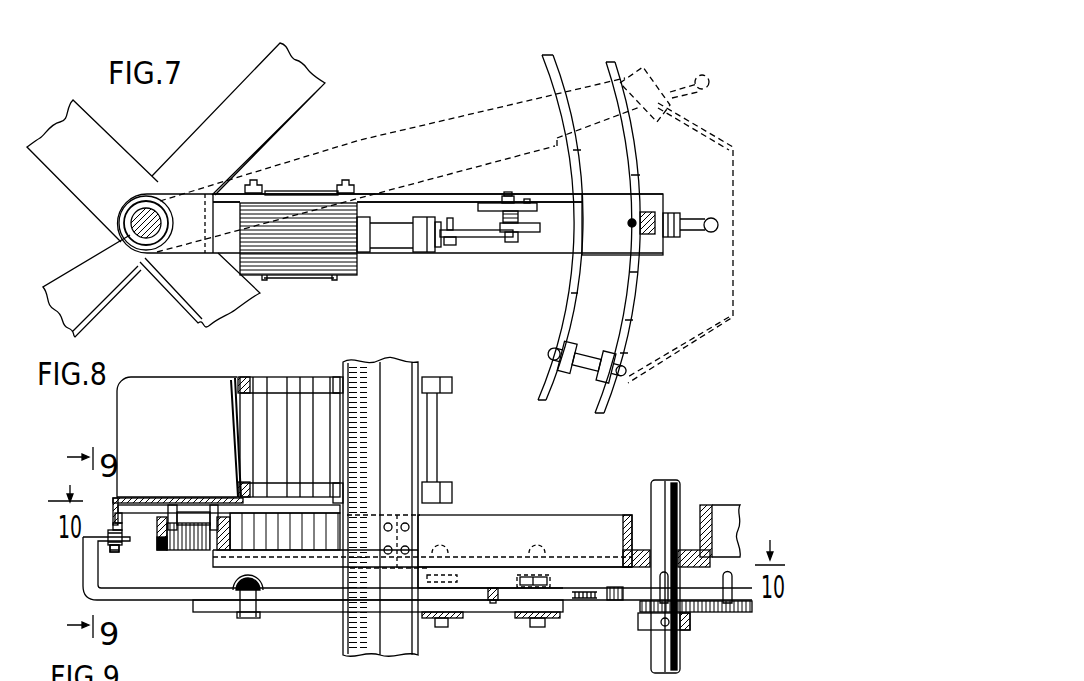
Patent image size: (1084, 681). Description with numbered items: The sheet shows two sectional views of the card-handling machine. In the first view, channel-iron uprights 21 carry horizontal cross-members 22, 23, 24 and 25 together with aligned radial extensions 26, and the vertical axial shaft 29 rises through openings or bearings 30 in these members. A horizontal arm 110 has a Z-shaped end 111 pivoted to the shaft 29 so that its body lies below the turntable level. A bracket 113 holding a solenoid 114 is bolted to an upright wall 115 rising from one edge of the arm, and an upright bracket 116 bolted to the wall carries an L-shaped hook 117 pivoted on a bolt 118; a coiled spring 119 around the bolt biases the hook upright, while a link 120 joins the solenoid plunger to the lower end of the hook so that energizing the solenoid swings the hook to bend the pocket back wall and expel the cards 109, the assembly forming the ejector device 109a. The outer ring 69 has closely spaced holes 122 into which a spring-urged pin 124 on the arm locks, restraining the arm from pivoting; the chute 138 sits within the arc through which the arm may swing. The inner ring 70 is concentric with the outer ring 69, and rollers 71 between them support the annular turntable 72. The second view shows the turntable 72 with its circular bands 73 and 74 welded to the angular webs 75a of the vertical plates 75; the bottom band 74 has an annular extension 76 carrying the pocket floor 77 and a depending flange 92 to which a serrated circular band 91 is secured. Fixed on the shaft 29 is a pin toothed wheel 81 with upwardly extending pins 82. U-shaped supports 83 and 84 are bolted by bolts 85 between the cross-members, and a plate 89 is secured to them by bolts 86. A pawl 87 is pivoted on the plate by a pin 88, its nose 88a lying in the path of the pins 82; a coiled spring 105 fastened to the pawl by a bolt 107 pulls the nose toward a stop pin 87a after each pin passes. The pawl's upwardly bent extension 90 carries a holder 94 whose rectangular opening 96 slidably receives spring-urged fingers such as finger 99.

In FIG. 8, the uprights 21 is at (397, 370).
In FIG. 7, the cross-member 22 is at (105, 140).
In FIG. 7, the cross-member 23 is at (258, 70).
In FIG. 8, the cross-member 23 is at (532, 520).
In FIG. 7, the cross-member 24 is at (65, 272).
In FIG. 8, the cross-member 24 is at (728, 513).
In FIG. 7, the cross-member 25 is at (188, 295).
In FIG. 8, the radial extension 26 is at (307, 560).
In FIG. 7, the vertical axial shaft 29 is at (138, 212).
In FIG. 8, the vertical axial shaft 29 is at (679, 481).
In FIG. 8, the openings or bearings 30 is at (678, 549).
In FIG. 7, the outer ring 69 is at (631, 338).
In FIG. 8, the outer ring 69 is at (163, 550).
In FIG. 7, the inner ring 70 is at (571, 299).
In FIG. 8, the inner ring 70 is at (280, 533).
In FIG. 7, the rollers 71 is at (592, 353).
In FIG. 8, the rollers 71 is at (187, 512).
In FIG. 8, the annular turntable 72 is at (440, 371).
In FIG. 8, the circular band 73 is at (452, 381).
In FIG. 8, the bottom band 74 is at (452, 487).
In FIG. 8, the plates or walls 75 is at (193, 385).
In FIG. 8, the angular webs or backs 75a is at (247, 395).
In FIG. 8, the annular extension 76 is at (217, 503).
In FIG. 8, the floor 77 is at (133, 497).
In FIG. 8, the pin toothed wheel 81 is at (713, 613).
In FIG. 8, the pins 82 is at (725, 583).
In FIG. 8, the U-shaped support 83 is at (455, 628).
In FIG. 8, the U-shaped support 84 is at (522, 625).
In FIG. 8, the bolts 85 is at (445, 547).
In FIG. 8, the bolts 86 is at (442, 630).
In FIG. 8, the pawl 87 is at (172, 597).
In FIG. 8, the stop pin 87a is at (493, 603).
In FIG. 8, the pin 88 is at (250, 618).
In FIG. 8, the nose 88a is at (625, 593).
In FIG. 8, the plate 89 is at (305, 612).
In FIG. 8, the upwardly bent extension 90 is at (83, 567).
In FIG. 8, the circular band 91 is at (115, 515).
In FIG. 8, the depending flange 92 is at (122, 514).
In FIG. 8, the holder 94 is at (120, 550).
In FIG. 8, the rectangular vertical opening 96 is at (112, 537).
In FIG. 8, the finger 99 is at (122, 532).
In FIG. 8, the coiled spring 105 is at (535, 578).
In FIG. 8, the bolt 107 is at (520, 578).
In FIG. 7, the cards 109 is at (417, 265).
In FIG. 7, the ejector device 109a is at (362, 160).
In FIG. 7, the horizontal arm 110 is at (562, 203).
In FIG. 7, the Z-shaped end 111 is at (185, 205).
In FIG. 7, the bracket 113 is at (307, 197).
In FIG. 7, the solenoid 114 is at (298, 280).
In FIG. 7, the upright wall 115 is at (445, 193).
In FIG. 7, the upright bracket 116 is at (478, 203).
In FIG. 7, the L-shaped member or hook 117 is at (539, 229).
In FIG. 7, the bolt 118 is at (512, 243).
In FIG. 7, the coiled spring 119 is at (503, 216).
In FIG. 7, the link 120 is at (478, 238).
In FIG. 7, the holes 122 is at (643, 167).
In FIG. 7, the pin 124 is at (697, 218).
In FIG. 7, the chute 138 is at (735, 285).